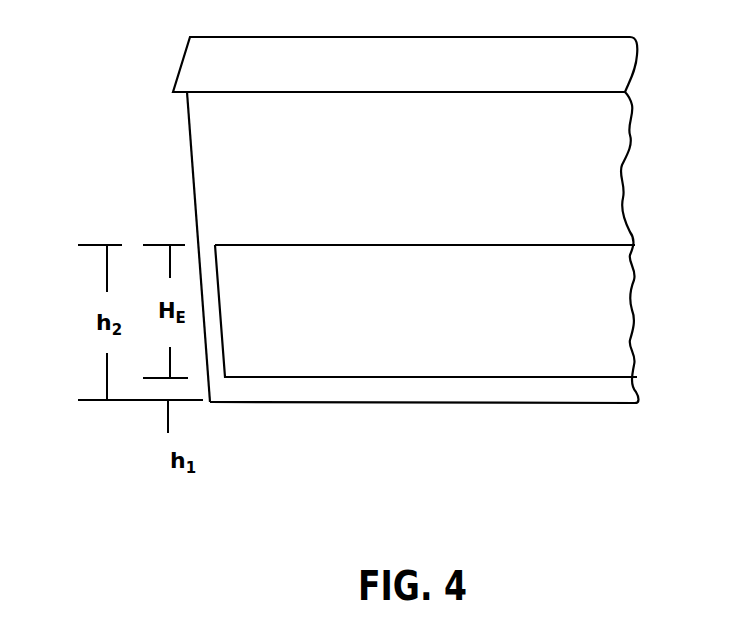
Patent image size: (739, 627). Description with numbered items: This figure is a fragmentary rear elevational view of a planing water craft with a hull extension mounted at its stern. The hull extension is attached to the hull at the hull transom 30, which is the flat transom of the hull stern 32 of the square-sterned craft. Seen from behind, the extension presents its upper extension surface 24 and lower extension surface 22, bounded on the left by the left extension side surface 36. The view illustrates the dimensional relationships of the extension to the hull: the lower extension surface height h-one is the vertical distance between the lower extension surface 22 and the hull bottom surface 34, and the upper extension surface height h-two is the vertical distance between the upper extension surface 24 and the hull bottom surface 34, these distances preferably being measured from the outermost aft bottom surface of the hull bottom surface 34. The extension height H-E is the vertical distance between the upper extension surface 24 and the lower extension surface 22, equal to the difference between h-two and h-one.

The lower extension surface 22 is at (495, 390).
The upper extension surface 24 is at (357, 240).
The hull transom 30 is at (207, 150).
The hull stern 32 is at (178, 112).
The hull bottom surface 34 is at (612, 412).
The left extension side surface 36 is at (207, 265).